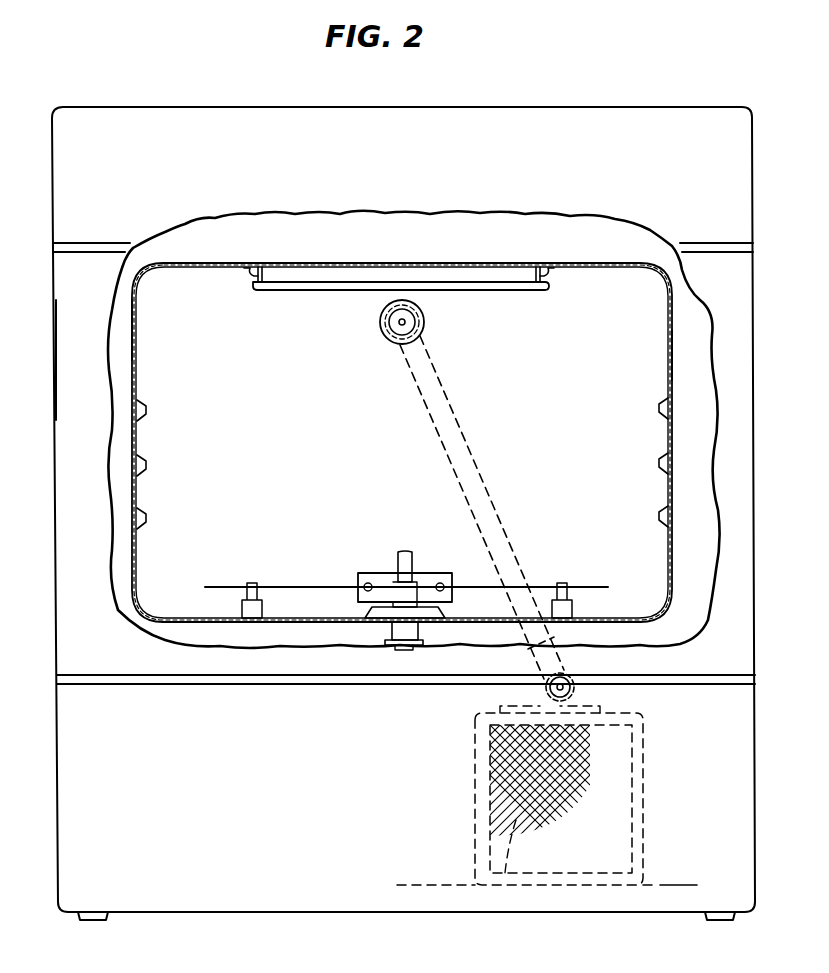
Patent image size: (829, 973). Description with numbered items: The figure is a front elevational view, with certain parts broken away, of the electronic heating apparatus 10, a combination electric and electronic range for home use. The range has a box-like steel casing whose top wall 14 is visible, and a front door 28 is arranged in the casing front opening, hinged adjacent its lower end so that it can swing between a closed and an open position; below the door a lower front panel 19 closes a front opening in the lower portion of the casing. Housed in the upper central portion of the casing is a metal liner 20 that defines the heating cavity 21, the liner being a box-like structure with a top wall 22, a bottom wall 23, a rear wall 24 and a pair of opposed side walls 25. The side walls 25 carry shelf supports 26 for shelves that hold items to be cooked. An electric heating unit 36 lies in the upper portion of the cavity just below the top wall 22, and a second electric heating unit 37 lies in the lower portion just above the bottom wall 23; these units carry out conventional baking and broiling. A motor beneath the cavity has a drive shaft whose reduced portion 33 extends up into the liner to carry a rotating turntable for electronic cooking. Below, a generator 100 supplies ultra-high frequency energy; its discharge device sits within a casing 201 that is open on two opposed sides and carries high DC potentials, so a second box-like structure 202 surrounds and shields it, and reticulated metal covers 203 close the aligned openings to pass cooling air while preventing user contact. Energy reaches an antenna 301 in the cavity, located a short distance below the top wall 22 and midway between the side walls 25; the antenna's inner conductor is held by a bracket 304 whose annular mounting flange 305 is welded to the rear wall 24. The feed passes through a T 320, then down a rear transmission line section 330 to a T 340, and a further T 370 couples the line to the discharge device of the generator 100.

The electronic heating apparatus 10 is at (102, 68).
The top wall 14 is at (200, 107).
The lower front panel 19 is at (208, 898).
The metal liner 20 is at (502, 262).
The heating cavity 21 is at (178, 433).
The top wall 22 is at (300, 263).
The bottom wall 23 is at (295, 623).
The rear wall 24 is at (522, 388).
The side walls 25 is at (139, 346).
The shelf supports 26 is at (147, 412).
The front door 28 is at (66, 355).
The reduced portion of output drive shaft 33 is at (396, 554).
The electric heating unit 36 is at (313, 291).
The electric heating unit 37 is at (294, 584).
The generator 100 is at (466, 830).
The casing 201 is at (600, 708).
The box-like structure 202 is at (645, 800).
The reticulated metal covers 203 is at (505, 885).
The antenna 301 is at (398, 325).
The bracket 304 is at (416, 320).
The annular mounting flange 305 is at (384, 312).
The T 320 is at (428, 330).
The rear section of transmission line 330 is at (438, 439).
The T 340 is at (556, 650).
The T 370 is at (545, 703).